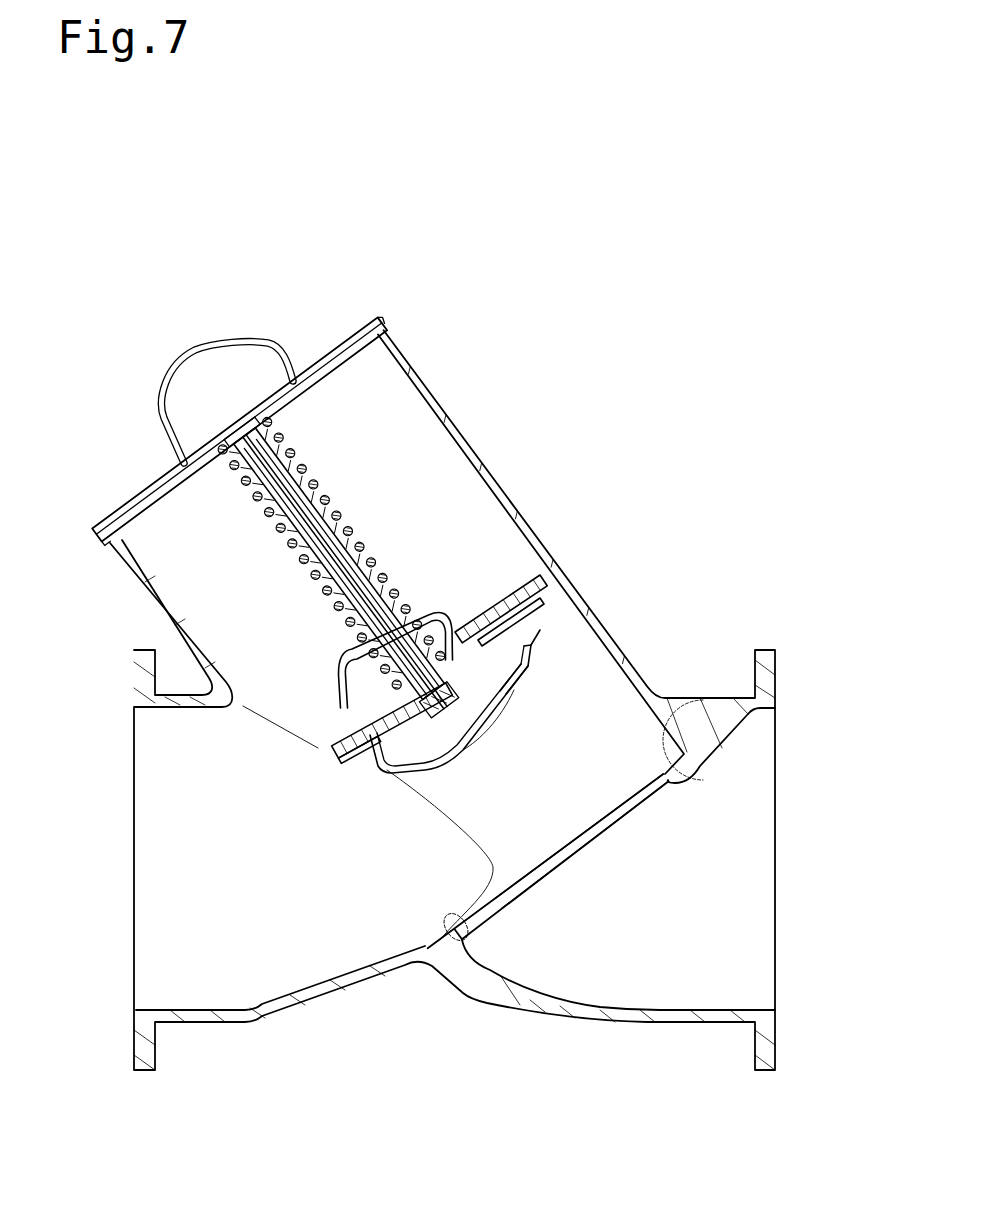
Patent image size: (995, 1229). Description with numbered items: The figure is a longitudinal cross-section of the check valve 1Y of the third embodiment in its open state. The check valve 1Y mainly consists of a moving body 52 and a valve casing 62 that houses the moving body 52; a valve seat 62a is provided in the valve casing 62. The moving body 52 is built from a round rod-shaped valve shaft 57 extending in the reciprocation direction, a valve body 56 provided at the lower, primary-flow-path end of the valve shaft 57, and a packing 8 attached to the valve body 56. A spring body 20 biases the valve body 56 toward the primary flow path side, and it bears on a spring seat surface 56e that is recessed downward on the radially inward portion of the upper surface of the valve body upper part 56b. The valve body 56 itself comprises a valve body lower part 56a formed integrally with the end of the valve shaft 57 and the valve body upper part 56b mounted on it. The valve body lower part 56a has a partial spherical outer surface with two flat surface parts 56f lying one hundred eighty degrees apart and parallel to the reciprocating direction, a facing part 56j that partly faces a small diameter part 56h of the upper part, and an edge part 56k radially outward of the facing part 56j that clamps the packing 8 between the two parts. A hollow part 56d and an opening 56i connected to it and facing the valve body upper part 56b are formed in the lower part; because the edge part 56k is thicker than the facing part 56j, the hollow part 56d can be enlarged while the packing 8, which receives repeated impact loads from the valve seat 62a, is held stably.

The check valve 1Y is at (146, 312).
The valve casing 62 is at (512, 472).
The valve seat 62a is at (703, 700).
The valve shaft 57 is at (333, 507).
The spring body 20 is at (332, 492).
The spring seat surface 56e is at (466, 668).
The valve body 56 is at (362, 1058).
The packing 8 is at (520, 600).
The valve body lower part 56a is at (420, 752).
The valve body upper part 56b is at (312, 758).
The edge part 56k is at (545, 600).
The hollow part 56d is at (418, 752).
The small diameter part 56h is at (537, 627).
The flat surface part 56f is at (527, 641).
The moving body 52 is at (543, 670).
The facing part 56j is at (520, 730).
The opening 56i is at (500, 758).